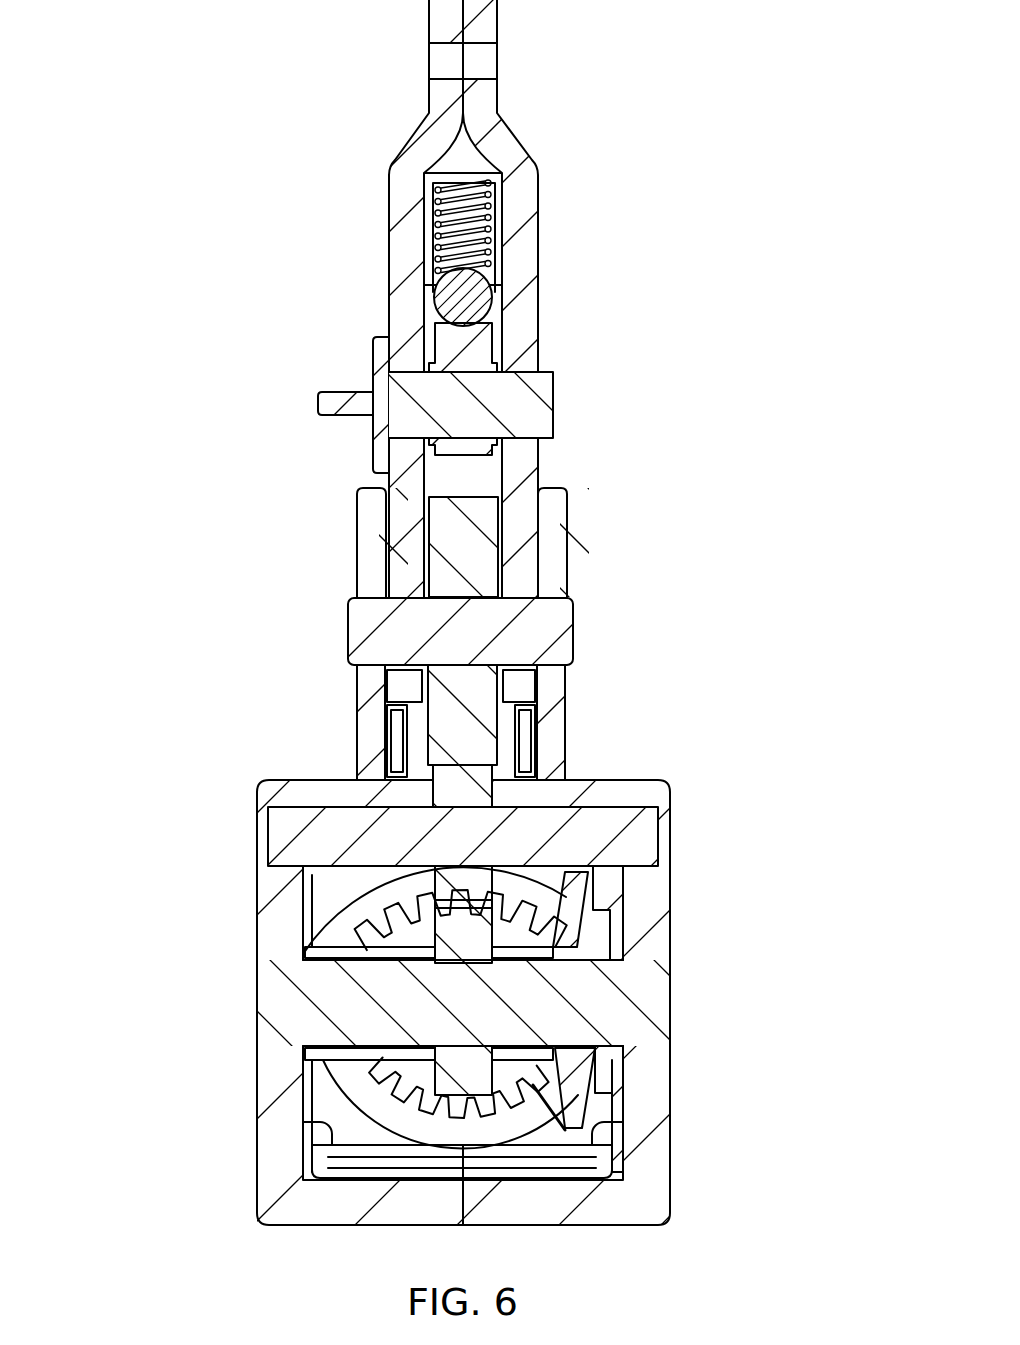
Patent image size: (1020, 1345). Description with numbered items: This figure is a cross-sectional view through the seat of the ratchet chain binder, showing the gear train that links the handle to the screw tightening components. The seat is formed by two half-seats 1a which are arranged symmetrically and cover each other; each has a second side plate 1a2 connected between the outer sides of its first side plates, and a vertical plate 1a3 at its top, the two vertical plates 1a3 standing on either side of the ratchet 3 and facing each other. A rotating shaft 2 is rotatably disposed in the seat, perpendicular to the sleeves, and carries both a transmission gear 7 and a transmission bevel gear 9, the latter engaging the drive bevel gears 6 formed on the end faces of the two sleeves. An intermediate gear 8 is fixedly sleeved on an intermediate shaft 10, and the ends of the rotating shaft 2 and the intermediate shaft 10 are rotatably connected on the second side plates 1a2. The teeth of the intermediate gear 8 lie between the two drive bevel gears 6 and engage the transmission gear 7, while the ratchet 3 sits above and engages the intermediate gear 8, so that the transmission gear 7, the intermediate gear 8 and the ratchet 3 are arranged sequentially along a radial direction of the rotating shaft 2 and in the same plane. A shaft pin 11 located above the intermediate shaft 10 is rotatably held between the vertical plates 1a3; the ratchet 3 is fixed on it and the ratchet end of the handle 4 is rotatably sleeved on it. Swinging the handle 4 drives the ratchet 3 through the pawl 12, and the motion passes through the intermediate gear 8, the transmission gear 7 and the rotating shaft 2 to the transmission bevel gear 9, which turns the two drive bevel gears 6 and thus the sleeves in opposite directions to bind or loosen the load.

The half-seat 1a is at (230, 906).
The second side plate 1a2 is at (283, 1088).
The vertical plate 1a3 is at (375, 552).
The rotating shaft 2 is at (595, 1007).
The ratchet 3 is at (462, 526).
The handle 4 is at (425, 148).
The drive bevel gear 6 is at (370, 932).
The transmission gear 7 is at (490, 1085).
The intermediate gear 8 is at (463, 798).
The transmission bevel gear 9 is at (580, 945).
The intermediate shaft 10 is at (593, 837).
The shaft pin 11 is at (385, 633).
The pawl 12 is at (470, 350).